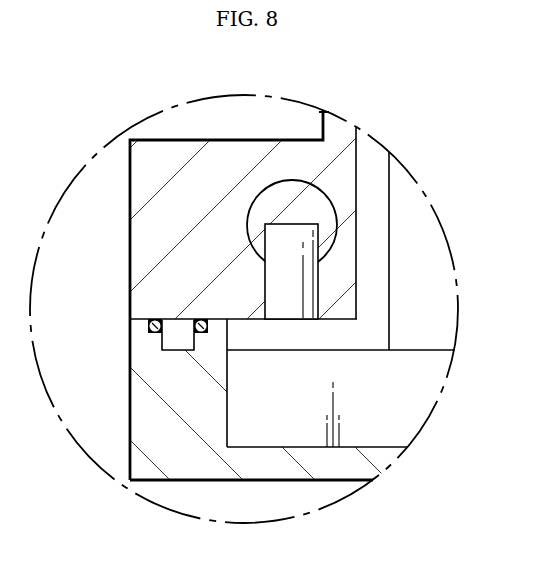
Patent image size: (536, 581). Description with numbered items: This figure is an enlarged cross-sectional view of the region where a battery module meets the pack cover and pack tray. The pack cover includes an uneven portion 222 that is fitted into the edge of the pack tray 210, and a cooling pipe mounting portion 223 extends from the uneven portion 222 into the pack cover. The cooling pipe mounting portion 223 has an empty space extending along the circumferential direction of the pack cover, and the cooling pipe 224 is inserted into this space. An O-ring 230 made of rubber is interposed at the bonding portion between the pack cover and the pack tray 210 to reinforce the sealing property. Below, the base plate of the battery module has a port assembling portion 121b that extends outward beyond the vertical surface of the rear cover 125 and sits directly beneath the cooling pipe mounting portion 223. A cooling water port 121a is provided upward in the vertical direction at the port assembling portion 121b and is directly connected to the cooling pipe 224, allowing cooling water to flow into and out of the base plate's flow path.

The cooling water port 121a is at (285, 281).
The port assembling portion 121b is at (277, 408).
The rear cover 125 is at (372, 168).
The pack tray 210 is at (334, 467).
The uneven portion 222 is at (177, 340).
The cooling pipe mounting portion 223 is at (287, 160).
The cooling pipe 224 is at (271, 204).
The O-ring 230 is at (148, 325).